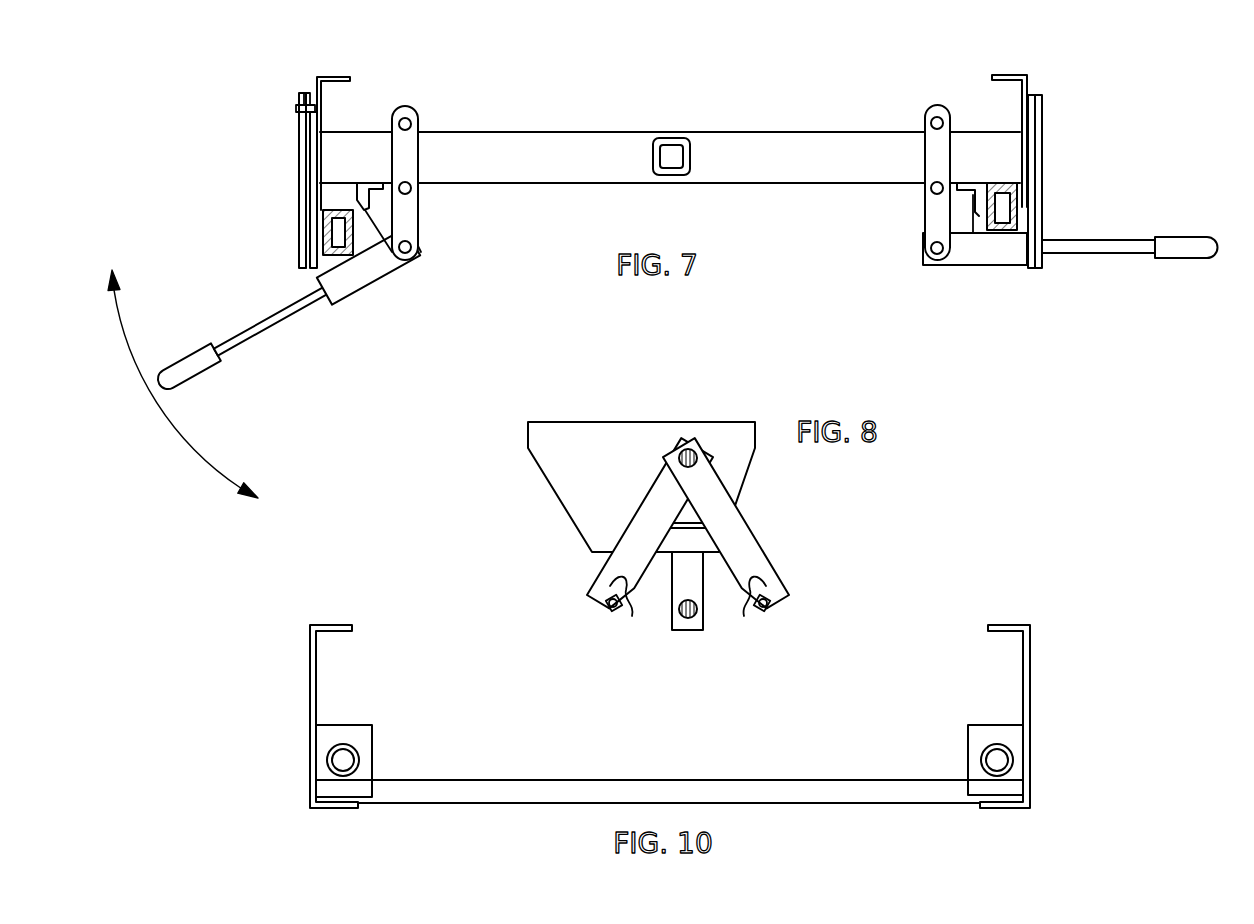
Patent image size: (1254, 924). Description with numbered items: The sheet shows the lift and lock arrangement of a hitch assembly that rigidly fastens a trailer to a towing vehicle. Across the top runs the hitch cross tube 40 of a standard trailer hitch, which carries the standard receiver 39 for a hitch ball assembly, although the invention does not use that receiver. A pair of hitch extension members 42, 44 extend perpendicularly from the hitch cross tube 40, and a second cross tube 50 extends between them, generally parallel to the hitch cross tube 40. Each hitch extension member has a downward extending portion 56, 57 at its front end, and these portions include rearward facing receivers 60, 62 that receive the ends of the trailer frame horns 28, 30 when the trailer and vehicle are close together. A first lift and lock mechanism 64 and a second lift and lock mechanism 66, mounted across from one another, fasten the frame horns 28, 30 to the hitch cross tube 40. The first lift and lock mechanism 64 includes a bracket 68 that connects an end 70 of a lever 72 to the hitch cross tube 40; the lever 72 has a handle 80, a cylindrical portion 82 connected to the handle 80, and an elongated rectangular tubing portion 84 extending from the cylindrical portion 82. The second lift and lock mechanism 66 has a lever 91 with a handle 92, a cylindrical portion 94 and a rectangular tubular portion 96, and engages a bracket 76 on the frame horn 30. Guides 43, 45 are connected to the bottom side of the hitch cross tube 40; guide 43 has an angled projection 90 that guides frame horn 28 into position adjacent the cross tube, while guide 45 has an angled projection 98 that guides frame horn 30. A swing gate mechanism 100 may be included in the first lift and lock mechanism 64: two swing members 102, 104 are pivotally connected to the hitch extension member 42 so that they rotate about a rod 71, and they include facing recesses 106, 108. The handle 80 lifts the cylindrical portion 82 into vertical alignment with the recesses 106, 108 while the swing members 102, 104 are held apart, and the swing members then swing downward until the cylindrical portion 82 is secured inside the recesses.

In FIG. 7, the frame horn 28 is at (323, 227).
In FIG. 7, the frame horn 30 is at (1018, 222).
In FIG. 7, the standard receiver 39 is at (675, 138).
In FIG. 7, the hitch cross tube 40 is at (527, 132).
In FIG. 7, the hitch extension member 42 is at (337, 76).
In FIG. 8, the hitch extension member 42 is at (553, 421).
In FIG. 10, the hitch extension member 42 is at (310, 686).
In FIG. 7, the guide 43 is at (372, 178).
In FIG. 7, the hitch extension member 44 is at (1003, 74).
In FIG. 10, the hitch extension member 44 is at (1030, 645).
In FIG. 7, the guide 45 is at (970, 182).
In FIG. 10, the second cross tube 50 is at (563, 780).
In FIG. 10, the downward extending portion 56 is at (316, 768).
In FIG. 10, the downward extending portion 57 is at (1030, 765).
In FIG. 10, the receiver 60 is at (338, 753).
In FIG. 10, the receiver 62 is at (1003, 768).
In FIG. 7, the first lift and lock mechanism 64 is at (288, 317).
In FIG. 8, the first lift and lock mechanism 64 is at (701, 630).
In FIG. 7, the second lift and lock mechanism 66 is at (1043, 353).
In FIG. 7, the bracket 68 is at (418, 212).
In FIG. 7, the end of lever 70 is at (296, 107).
In FIG. 8, the rod 71 is at (683, 449).
In FIG. 7, the lever 72 is at (281, 396).
In FIG. 7, the bracket 76 is at (923, 214).
In FIG. 7, the handle 80 is at (188, 356).
In FIG. 8, the handle 80 is at (684, 618).
In FIG. 7, the cylindrical portion 82 is at (283, 325).
In FIG. 7, the elongated rectangular tubing portion 84 is at (355, 293).
In FIG. 7, the angled projection 90 is at (400, 262).
In FIG. 7, the lever 91 is at (1116, 356).
In FIG. 7, the handle 92 is at (1177, 260).
In FIG. 7, the cylindrical portion 94 is at (1087, 253).
In FIG. 7, the rectangular tubular portion 96 is at (1010, 265).
In FIG. 7, the angled projection 98 is at (972, 234).
In FIG. 7, the swing gate mechanism 100 is at (299, 170).
In FIG. 8, the swing gate mechanism 100 is at (845, 573).
In FIG. 7, the swing member 102 is at (299, 140).
In FIG. 8, the swing member 102 is at (767, 552).
In FIG. 7, the swing member 104 is at (304, 208).
In FIG. 8, the swing member 104 is at (593, 582).
In FIG. 8, the recess 106 is at (747, 609).
In FIG. 8, the recess 108 is at (626, 609).